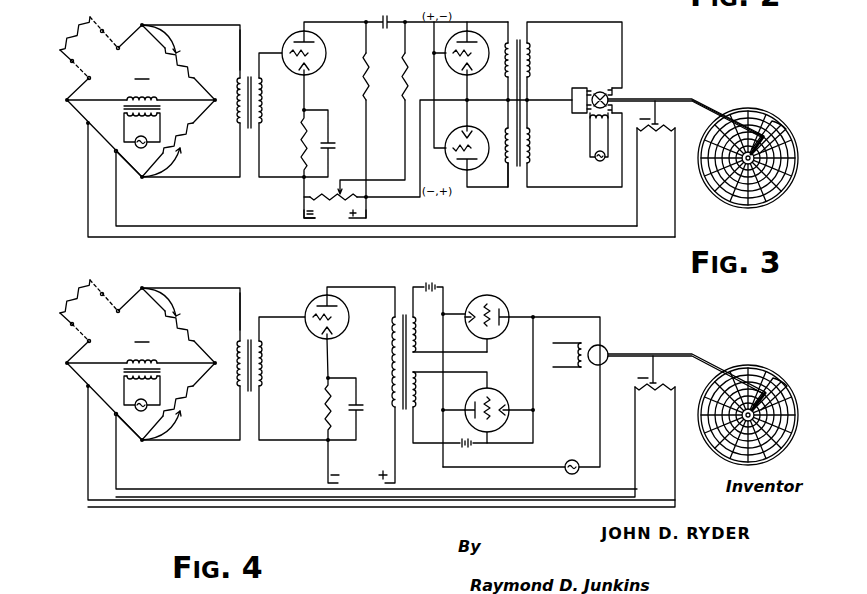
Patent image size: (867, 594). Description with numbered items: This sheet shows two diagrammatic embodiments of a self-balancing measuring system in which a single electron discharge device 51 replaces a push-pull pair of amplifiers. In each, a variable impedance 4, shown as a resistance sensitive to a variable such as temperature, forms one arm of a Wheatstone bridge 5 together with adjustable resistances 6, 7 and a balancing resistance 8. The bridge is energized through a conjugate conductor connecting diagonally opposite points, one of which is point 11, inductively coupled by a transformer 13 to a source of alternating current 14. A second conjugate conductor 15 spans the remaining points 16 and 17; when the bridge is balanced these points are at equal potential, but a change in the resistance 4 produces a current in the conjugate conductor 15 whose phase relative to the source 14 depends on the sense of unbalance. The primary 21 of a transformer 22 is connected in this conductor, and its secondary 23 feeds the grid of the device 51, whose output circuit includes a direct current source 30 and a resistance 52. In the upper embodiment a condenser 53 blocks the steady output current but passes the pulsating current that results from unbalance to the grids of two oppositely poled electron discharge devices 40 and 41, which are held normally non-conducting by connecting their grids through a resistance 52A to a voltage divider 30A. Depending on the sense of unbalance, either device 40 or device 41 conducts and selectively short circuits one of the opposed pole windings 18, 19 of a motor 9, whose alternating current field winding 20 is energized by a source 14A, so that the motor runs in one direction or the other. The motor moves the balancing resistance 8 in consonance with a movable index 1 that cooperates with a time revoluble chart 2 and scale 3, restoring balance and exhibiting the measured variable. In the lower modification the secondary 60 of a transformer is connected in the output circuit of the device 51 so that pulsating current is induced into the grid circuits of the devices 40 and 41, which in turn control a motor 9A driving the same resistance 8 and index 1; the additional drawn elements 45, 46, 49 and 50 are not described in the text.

In FIG. 3, the movable index 1 is at (712, 103).
In FIG. 4, the movable index 1 is at (713, 359).
In FIG. 3, the time revoluble chart 2 is at (768, 204).
In FIG. 4, the time revoluble chart 2 is at (772, 457).
In FIG. 3, the scale 3 is at (777, 125).
In FIG. 4, the scale 3 is at (777, 382).
In FIG. 3, the variable impedance 4 is at (76, 24).
In FIG. 4, the variable impedance 4 is at (76, 287).
In FIG. 3, the Wheatstone bridge 5 is at (142, 70).
In FIG. 4, the Wheatstone bridge 5 is at (142, 333).
In FIG. 3, the adjustable resistance 6 is at (178, 62).
In FIG. 4, the adjustable resistance 6 is at (192, 336).
In FIG. 3, the adjustable resistance 7 is at (193, 130).
In FIG. 4, the adjustable resistance 7 is at (193, 393).
In FIG. 3, the balancing resistance 8 is at (648, 131).
In FIG. 4, the balancing resistance 8 is at (648, 391).
In FIG. 3, the motor 9 is at (599, 92).
In FIG. 4, the motor 9A is at (605, 348).
In FIG. 3, the bridge point 11 is at (67, 102).
In FIG. 4, the bridge point 11 is at (67, 365).
In FIG. 3, the transformer 13 is at (124, 108).
In FIG. 4, the transformer 13 is at (124, 372).
In FIG. 3, the source of alternating current 14 is at (134, 143).
In FIG. 4, the source of alternating current 14 is at (134, 406).
In FIG. 3, the source 14A is at (598, 161).
In FIG. 3, the conjugate conductor 15 is at (240, 40).
In FIG. 4, the conjugate conductor 15 is at (240, 303).
In FIG. 3, the bridge point 16 is at (143, 23).
In FIG. 4, the bridge point 16 is at (142, 287).
In FIG. 3, the bridge point 17 is at (142, 178).
In FIG. 4, the bridge point 17 is at (142, 441).
In FIG. 3, the pole winding 18 is at (583, 87).
In FIG. 3, the pole winding 19 is at (617, 97).
In FIG. 3, the alternating current field winding 20 is at (592, 128).
In FIG. 3, the primary 21 is at (236, 118).
In FIG. 4, the primary 21 is at (236, 382).
In FIG. 3, the transformer 22 is at (254, 132).
In FIG. 4, the transformer 22 is at (254, 396).
In FIG. 3, the secondary 23 is at (263, 112).
In FIG. 4, the secondary 23 is at (264, 372).
In FIG. 3, the direct current source 30 is at (335, 218).
In FIG. 4, the direct current source 30 is at (361, 450).
In FIG. 3, the voltage divider 30A is at (315, 191).
In FIG. 3, the electron discharge device 40 is at (467, 124).
In FIG. 4, the electron discharge device 40 is at (494, 392).
In FIG. 3, the electron discharge device 41 is at (468, 77).
In FIG. 4, the electron discharge device 41 is at (505, 299).
In FIG. 4, the relay coil 45 is at (585, 372).
In FIG. 4, the secondary winding 46 is at (403, 417).
In FIG. 4, the bias battery 49 is at (432, 278).
In FIG. 4, the bias battery 50 is at (480, 450).
In FIG. 3, the electron discharge device 51 is at (322, 66).
In FIG. 4, the electron discharge device 51 is at (347, 324).
In FIG. 3, the resistance 52 is at (369, 86).
In FIG. 3, the resistance 52A is at (389, 60).
In FIG. 3, the condenser 53 is at (384, 13).
In FIG. 4, the secondary 60 is at (392, 355).